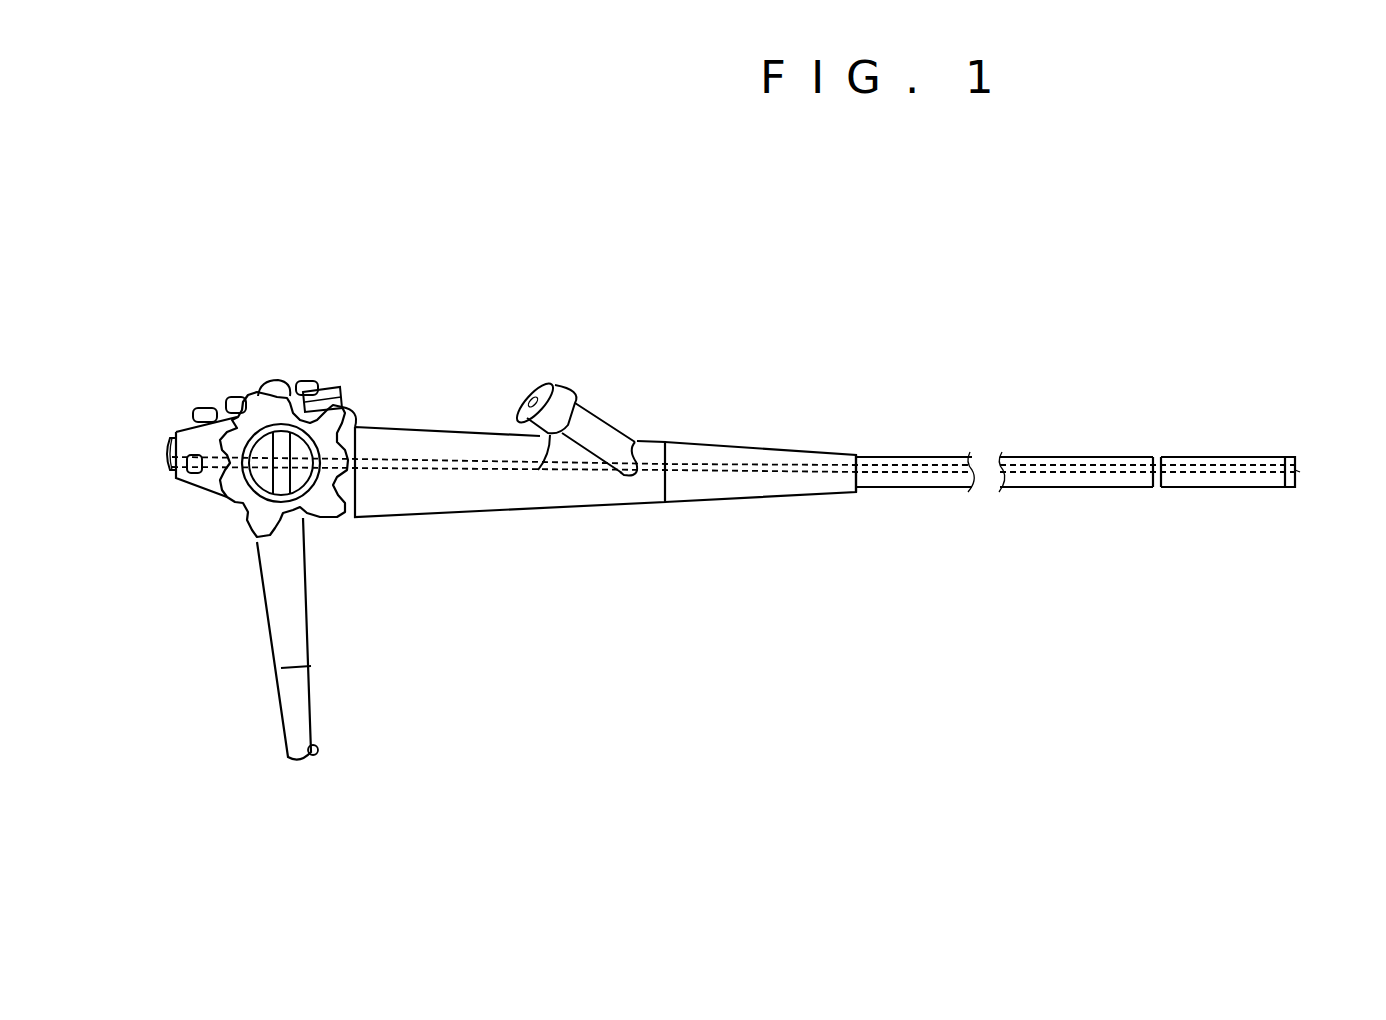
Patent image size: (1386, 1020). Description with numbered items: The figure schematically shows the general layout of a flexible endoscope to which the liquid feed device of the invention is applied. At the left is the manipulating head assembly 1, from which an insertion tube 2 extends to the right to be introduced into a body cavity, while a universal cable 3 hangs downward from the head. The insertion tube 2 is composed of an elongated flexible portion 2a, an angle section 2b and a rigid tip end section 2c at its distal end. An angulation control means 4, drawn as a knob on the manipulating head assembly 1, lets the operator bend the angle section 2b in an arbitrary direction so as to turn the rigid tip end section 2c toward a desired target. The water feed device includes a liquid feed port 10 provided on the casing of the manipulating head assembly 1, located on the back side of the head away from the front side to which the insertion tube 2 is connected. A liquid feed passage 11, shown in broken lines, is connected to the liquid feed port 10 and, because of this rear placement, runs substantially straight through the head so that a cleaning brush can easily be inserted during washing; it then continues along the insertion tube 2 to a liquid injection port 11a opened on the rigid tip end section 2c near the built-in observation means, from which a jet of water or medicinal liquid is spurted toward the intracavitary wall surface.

The manipulating head assembly 1 is at (534, 505).
The insertion tube 2 is at (1011, 462).
The elongated flexible portion 2a is at (1055, 488).
The angle section 2b is at (1212, 490).
The rigid tip end section 2c is at (1293, 452).
The universal cable 3 is at (295, 732).
The angulation control means 4 is at (353, 418).
The liquid feed port 10 is at (241, 410).
The liquid feed passage 11 is at (728, 465).
The liquid injection port 11a is at (1300, 470).